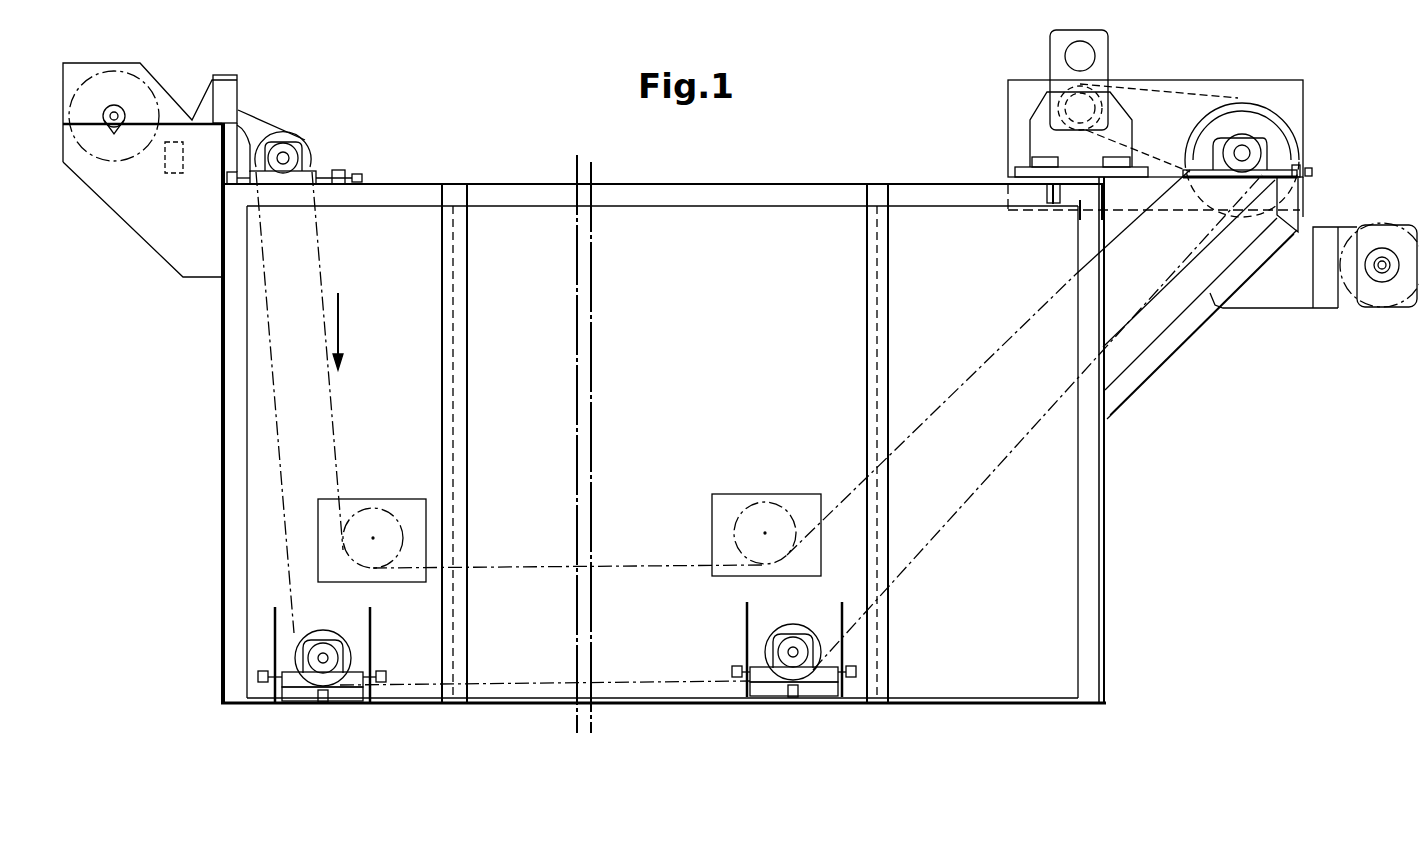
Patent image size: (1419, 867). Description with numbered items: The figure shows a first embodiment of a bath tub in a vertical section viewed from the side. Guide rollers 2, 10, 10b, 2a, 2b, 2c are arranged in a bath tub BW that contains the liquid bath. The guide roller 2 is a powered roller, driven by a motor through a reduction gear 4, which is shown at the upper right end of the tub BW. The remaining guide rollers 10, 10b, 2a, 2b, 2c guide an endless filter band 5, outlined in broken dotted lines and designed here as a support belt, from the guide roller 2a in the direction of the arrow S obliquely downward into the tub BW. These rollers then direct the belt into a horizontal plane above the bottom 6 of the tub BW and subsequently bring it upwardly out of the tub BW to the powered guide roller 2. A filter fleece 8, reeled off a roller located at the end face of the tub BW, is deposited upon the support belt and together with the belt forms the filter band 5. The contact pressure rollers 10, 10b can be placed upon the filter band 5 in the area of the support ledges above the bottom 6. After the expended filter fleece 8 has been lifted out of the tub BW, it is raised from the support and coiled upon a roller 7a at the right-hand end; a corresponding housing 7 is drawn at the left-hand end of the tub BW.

The guide roller 2 is at (1283, 132).
The guide roller 2a is at (287, 140).
The guide roller 2b is at (325, 643).
The guide roller 2c is at (783, 633).
The reduction gear 4 is at (1157, 92).
The endless filter band 5 is at (338, 447).
The bottom of the tub 6 is at (628, 704).
The scraper housing 7 is at (128, 88).
The roller 7a is at (1367, 293).
The filter fleece 8 is at (257, 120).
The guide roller 10 is at (777, 508).
The guide roller 10b is at (372, 527).
The bath tub BW is at (1053, 552).
The arrow S is at (349, 331).